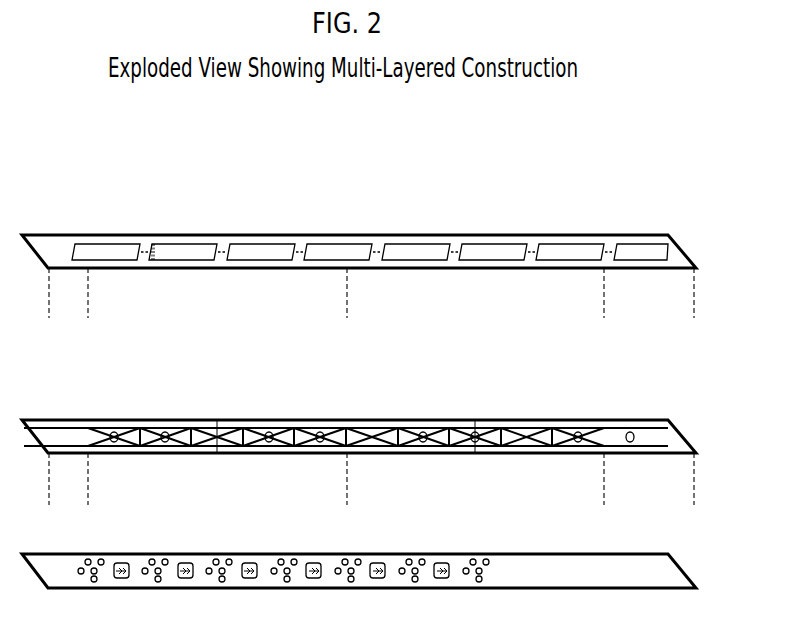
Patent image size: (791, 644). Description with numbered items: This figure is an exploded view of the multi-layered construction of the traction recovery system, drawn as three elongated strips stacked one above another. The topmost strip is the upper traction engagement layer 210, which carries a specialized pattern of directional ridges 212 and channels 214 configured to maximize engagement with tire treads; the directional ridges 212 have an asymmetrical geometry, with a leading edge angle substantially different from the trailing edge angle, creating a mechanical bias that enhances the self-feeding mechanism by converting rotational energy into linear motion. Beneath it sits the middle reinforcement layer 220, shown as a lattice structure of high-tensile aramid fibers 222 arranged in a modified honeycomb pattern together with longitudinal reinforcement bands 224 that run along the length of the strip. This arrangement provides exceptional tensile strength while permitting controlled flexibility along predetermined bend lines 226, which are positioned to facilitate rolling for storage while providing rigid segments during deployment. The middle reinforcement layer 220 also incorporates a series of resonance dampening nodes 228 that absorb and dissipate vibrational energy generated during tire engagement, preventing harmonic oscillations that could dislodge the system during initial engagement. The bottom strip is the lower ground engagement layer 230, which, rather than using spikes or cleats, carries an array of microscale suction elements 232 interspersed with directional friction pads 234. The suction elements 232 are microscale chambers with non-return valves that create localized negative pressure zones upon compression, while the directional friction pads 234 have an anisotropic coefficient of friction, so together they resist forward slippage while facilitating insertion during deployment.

The upper traction engagement layer 210 is at (359, 238).
The directional ridges 212 is at (370, 231).
The channels 214 is at (377, 230).
The middle reinforcement layer 220 is at (359, 423).
The high-tensile aramid fibers 222 is at (361, 423).
The longitudinal reinforcement bands 224 is at (346, 414).
The bend lines 226 is at (346, 460).
The resonance dampening nodes 228 is at (346, 448).
The lower ground engagement layer 230 is at (359, 585).
The microscale suction elements 232 is at (283, 558).
The directional friction pads 234 is at (281, 556).